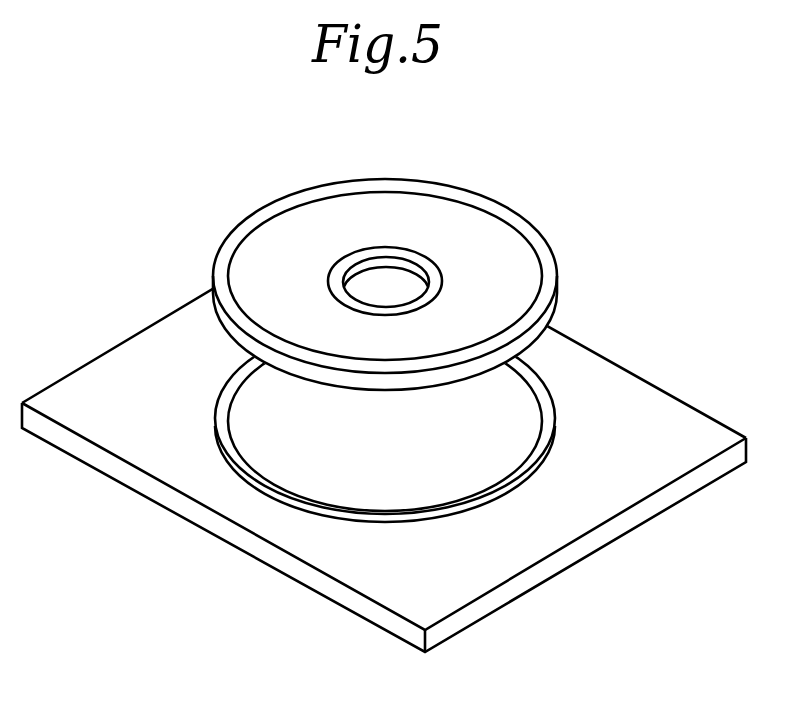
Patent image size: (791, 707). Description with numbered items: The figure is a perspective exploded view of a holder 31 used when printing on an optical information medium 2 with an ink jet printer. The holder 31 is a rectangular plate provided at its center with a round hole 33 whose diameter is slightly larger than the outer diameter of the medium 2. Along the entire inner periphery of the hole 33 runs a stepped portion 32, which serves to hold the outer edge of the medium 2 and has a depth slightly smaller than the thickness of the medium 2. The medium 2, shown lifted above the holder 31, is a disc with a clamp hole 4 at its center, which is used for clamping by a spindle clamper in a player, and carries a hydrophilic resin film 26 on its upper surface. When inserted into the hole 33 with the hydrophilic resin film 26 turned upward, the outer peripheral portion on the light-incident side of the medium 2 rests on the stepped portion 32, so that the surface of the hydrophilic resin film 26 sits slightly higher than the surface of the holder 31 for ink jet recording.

The optical information medium 2 is at (517, 213).
The clamp hole 4 is at (388, 278).
The hydrophilic resin film 26 is at (277, 255).
The holder 31 is at (618, 400).
The stepped portion 32 is at (237, 390).
The round hole 33 is at (495, 413).